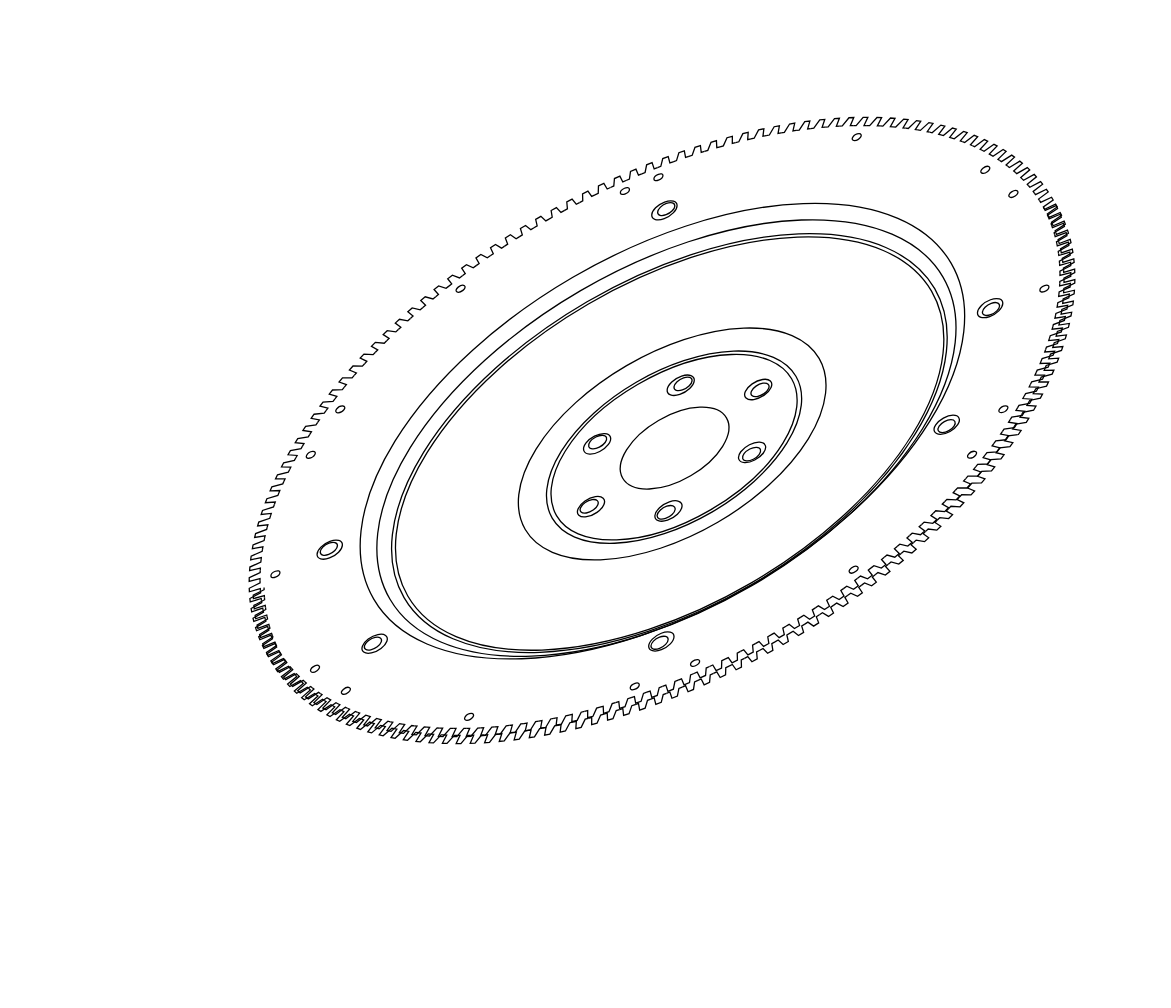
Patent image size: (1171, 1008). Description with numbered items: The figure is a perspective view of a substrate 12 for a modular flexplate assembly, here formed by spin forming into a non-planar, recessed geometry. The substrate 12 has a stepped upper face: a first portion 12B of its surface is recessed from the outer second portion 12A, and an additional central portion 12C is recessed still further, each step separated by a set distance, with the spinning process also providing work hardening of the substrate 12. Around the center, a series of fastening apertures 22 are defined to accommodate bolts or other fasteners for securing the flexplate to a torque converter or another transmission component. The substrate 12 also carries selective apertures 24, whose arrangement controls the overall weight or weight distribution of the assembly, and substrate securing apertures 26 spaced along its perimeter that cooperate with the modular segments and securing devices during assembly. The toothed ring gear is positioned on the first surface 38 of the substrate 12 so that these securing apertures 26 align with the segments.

The substrate 12 is at (686, 104).
The second portion of the upper surface 12A is at (841, 157).
The first portion of the first surface 12B is at (888, 335).
The recessed portion 12C is at (654, 532).
The fastening apertures 22 is at (957, 425).
The selective apertures 24 is at (754, 455).
The substrate securing apertures 26 is at (1048, 285).
The first surface 38 is at (967, 167).